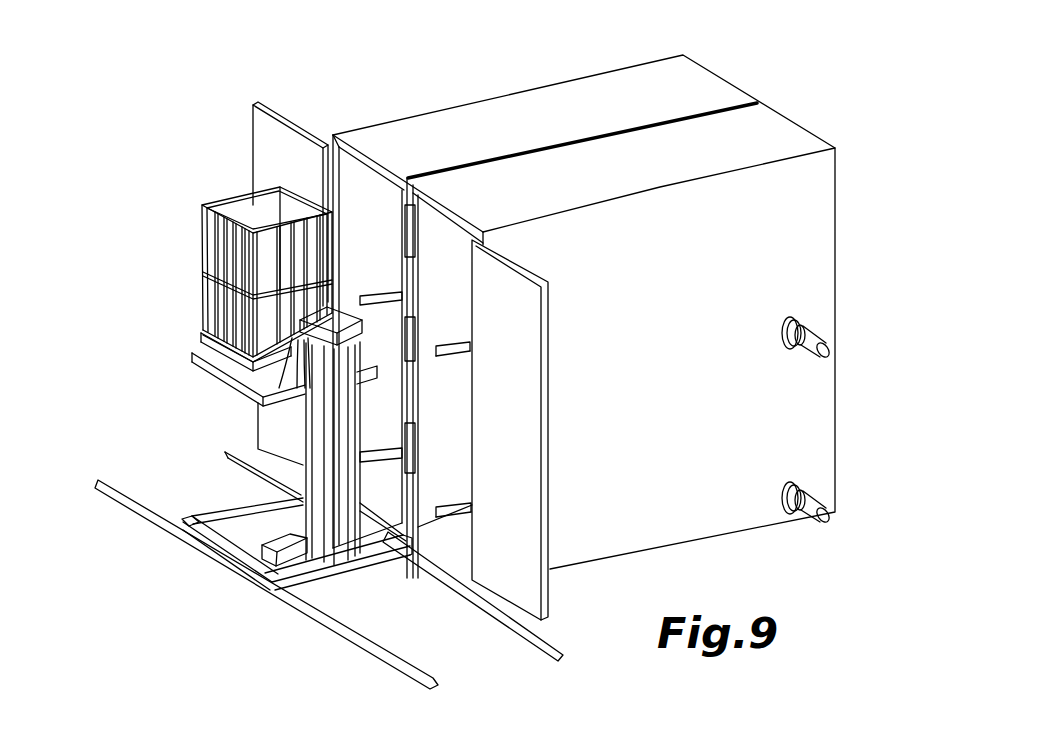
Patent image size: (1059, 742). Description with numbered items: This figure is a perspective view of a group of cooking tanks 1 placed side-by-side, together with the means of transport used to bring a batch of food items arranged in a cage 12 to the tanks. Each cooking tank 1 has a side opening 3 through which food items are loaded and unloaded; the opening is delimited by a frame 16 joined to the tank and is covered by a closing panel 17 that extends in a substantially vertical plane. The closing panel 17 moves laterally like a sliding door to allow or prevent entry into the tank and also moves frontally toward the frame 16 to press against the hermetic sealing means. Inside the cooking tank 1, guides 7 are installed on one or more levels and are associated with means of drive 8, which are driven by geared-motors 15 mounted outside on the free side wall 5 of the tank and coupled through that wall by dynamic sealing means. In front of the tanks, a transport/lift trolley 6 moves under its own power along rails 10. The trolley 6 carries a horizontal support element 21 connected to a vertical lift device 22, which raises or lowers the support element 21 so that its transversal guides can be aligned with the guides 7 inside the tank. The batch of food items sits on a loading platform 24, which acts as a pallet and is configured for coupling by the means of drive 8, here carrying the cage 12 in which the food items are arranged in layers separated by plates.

The cooking tank 1 is at (557, 94).
The side opening 3 is at (358, 200).
The free side wall 5 is at (808, 213).
The transport/lift trolley 6 is at (247, 517).
The guides 7 is at (452, 353).
The means of drive 8 is at (464, 343).
The rails 10 is at (127, 502).
The cage 12 is at (205, 250).
The geared-motor 15 is at (818, 342).
The frame 16 is at (352, 152).
The closing panel 17 is at (260, 132).
The horizontal support element 21 is at (220, 378).
The vertical lift device 22 is at (317, 452).
The loading platform 24 is at (208, 337).